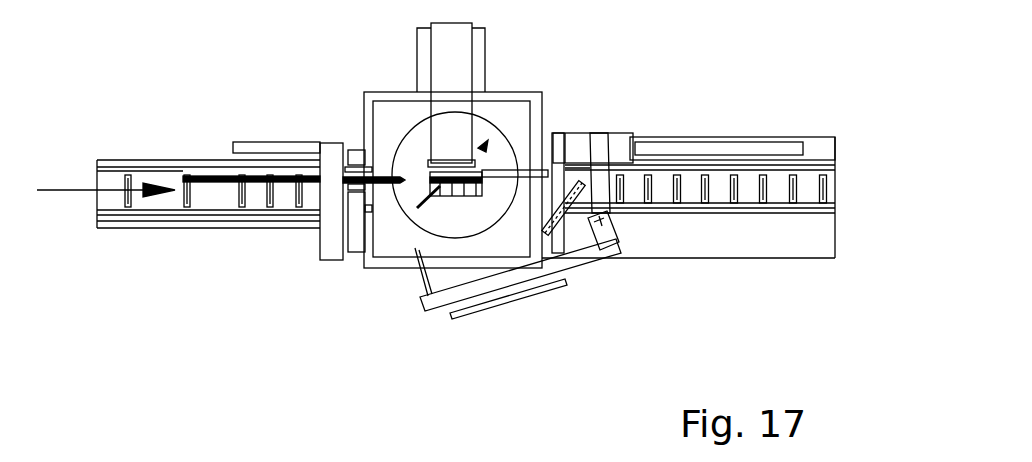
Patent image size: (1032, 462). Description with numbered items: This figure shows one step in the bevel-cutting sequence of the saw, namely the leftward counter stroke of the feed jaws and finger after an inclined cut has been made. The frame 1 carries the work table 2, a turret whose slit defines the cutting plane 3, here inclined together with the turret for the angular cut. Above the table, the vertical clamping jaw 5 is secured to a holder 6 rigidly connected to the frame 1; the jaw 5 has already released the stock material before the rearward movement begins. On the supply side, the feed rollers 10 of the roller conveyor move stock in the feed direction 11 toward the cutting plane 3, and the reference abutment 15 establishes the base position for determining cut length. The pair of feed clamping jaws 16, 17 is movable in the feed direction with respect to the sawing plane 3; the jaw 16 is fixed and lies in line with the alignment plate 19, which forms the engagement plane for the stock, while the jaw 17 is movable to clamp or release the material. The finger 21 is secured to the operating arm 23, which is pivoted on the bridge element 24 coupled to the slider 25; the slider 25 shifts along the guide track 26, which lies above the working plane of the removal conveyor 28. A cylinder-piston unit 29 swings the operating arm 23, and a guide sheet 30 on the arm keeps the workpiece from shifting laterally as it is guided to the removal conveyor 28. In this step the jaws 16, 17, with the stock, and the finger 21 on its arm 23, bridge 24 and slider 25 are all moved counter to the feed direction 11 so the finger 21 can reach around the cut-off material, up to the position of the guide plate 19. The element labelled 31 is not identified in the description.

The frame 1 is at (498, 98).
The work table 2 is at (418, 140).
The cutting plane 3 is at (480, 145).
The vertical clamping jaw 5 is at (425, 178).
The holder 6 is at (453, 62).
The feed rollers 10 is at (208, 239).
The feed direction 11 is at (97, 187).
The reference abutment 15 is at (298, 200).
The fixed feed clamping jaw 16 is at (352, 150).
The movable feed clamping jaw 17 is at (353, 240).
The alignment plate 19 is at (522, 168).
The finger 21 is at (417, 262).
The operating arm 23 is at (480, 290).
The bridge element 24 is at (607, 133).
The slider 25 is at (680, 137).
The guide track 26 is at (757, 153).
The removal conveyor 28 is at (720, 205).
The cylinder-piston unit 29 is at (587, 252).
The guide sheet 30 is at (548, 278).
The slide strip 31 is at (527, 275).